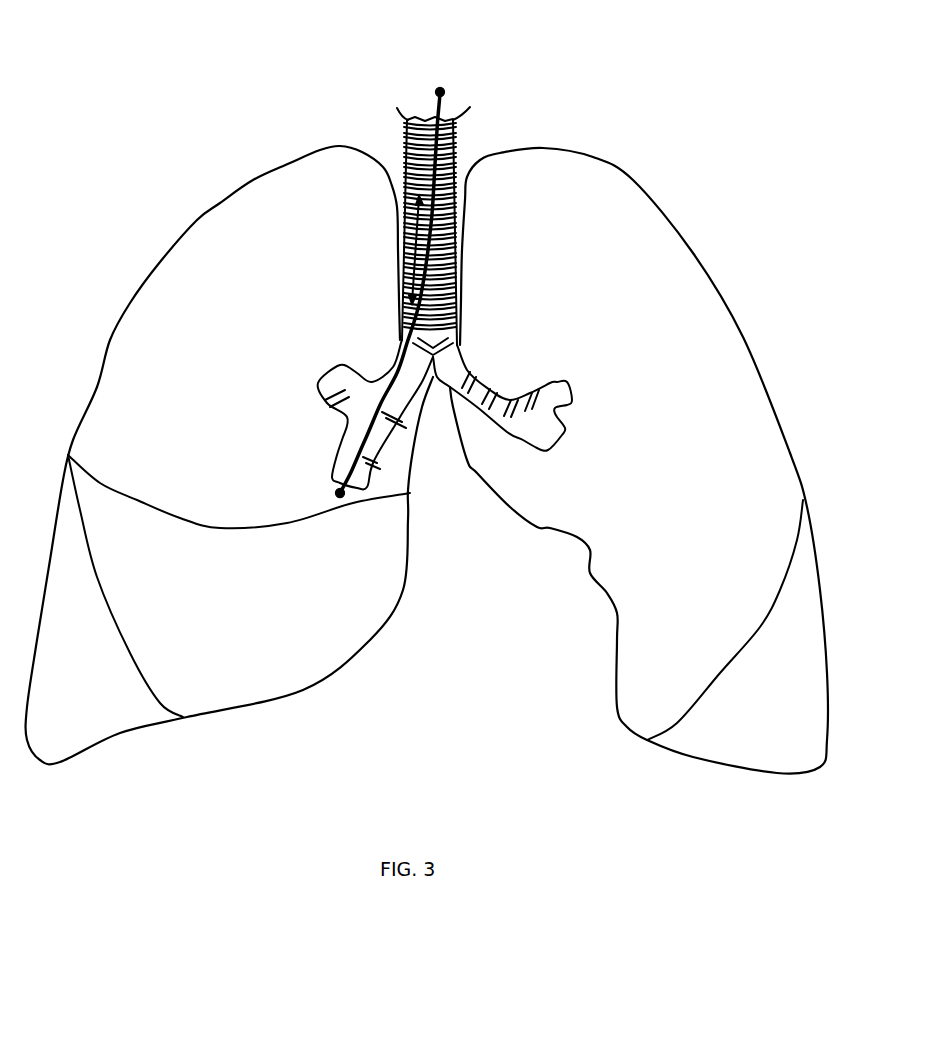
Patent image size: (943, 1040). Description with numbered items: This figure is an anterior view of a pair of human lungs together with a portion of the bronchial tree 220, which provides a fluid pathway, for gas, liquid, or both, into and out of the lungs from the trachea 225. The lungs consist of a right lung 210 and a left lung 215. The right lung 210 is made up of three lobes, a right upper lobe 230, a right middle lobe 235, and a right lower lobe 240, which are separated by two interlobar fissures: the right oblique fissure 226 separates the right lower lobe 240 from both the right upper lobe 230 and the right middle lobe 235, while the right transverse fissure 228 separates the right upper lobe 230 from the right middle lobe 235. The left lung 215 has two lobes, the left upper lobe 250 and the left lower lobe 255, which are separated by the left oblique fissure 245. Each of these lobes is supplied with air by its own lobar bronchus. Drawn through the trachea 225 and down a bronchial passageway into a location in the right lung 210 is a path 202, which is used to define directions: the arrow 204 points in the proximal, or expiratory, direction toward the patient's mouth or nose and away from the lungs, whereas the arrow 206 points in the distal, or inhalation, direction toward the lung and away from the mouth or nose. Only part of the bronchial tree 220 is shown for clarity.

The path 202 is at (452, 147).
The arrow 204 is at (407, 205).
The arrow 206 is at (400, 270).
The right lung 210 is at (247, 162).
The left lung 215 is at (612, 172).
The bronchial tree 220 is at (432, 410).
The trachea 225 is at (452, 147).
The right oblique fissure 226 is at (97, 577).
The right transverse fissure 228 is at (137, 502).
The right upper lobe 230 is at (230, 347).
The right middle lobe 235 is at (240, 617).
The right lower lobe 240 is at (92, 692).
The left oblique fissure 245 is at (748, 647).
The left upper lobe 250 is at (677, 478).
The left lower lobe 255 is at (777, 732).